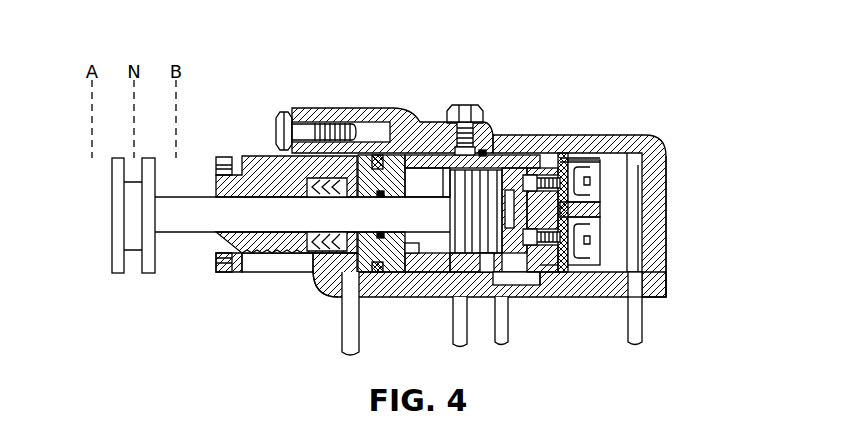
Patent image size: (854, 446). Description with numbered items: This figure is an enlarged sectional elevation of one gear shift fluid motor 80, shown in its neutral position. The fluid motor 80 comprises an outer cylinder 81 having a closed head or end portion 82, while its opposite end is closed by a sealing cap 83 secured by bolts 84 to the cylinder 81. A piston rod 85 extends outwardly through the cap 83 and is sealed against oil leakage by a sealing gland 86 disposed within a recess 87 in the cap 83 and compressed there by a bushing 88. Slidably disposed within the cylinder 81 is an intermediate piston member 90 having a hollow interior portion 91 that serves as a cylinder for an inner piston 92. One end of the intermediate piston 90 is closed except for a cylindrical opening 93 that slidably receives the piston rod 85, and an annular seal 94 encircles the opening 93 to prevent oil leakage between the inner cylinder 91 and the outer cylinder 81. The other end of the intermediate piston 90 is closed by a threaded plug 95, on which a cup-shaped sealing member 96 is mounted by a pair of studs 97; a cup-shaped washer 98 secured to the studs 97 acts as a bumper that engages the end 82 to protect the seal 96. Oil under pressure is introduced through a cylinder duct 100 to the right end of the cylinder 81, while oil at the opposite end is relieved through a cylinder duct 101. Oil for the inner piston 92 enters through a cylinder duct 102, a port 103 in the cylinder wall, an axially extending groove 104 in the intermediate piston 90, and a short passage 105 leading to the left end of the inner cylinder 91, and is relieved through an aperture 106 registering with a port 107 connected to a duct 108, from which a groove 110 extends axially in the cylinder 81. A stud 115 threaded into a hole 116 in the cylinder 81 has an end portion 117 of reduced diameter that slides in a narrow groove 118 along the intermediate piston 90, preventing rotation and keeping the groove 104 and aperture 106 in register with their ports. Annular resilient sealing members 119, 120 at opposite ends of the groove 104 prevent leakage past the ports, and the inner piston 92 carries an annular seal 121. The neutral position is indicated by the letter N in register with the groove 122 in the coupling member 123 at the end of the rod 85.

The fluid motor 80 is at (605, 128).
The outer cylinder 81 is at (528, 175).
The closed head or end portion 82 is at (660, 190).
The sealing cap 83 is at (268, 157).
The bolts 84 is at (282, 112).
The piston rod 85 is at (192, 222).
The sealing gland 86 is at (300, 267).
The recess 87 is at (304, 287).
The bushing 88 is at (244, 272).
The intermediate piston member 90 is at (413, 178).
The hollow interior portion 91 is at (435, 168).
The inner piston 92 is at (490, 187).
The cylindrical opening 93 is at (388, 230).
The annular seal 94 is at (376, 203).
The threaded plug 95 is at (562, 155).
The cup-shaped sealing member 96 is at (556, 265).
The studs 97 is at (590, 240).
The cup-shaped washer 98 is at (606, 148).
The cylinder duct 100 is at (642, 320).
The cylinder duct 101 is at (359, 327).
The cylinder duct 102 is at (456, 320).
The port 103 is at (422, 283).
The axially extending groove 104 is at (405, 285).
The short passage 105 is at (412, 249).
The aperture 106 is at (486, 272).
The port 107 is at (498, 280).
The duct 108 is at (505, 328).
The groove 110 is at (523, 280).
The stud 115 is at (466, 105).
The hole 116 is at (470, 128).
The end portion of reduced diameter 117 is at (473, 151).
The narrow groove 118 is at (439, 169).
The annular resilient sealing member 119 is at (378, 154).
The annular resilient sealing member 120 is at (486, 153).
The annular seal 121 is at (468, 278).
The groove 122 is at (133, 273).
The coupling member 123 is at (108, 251).